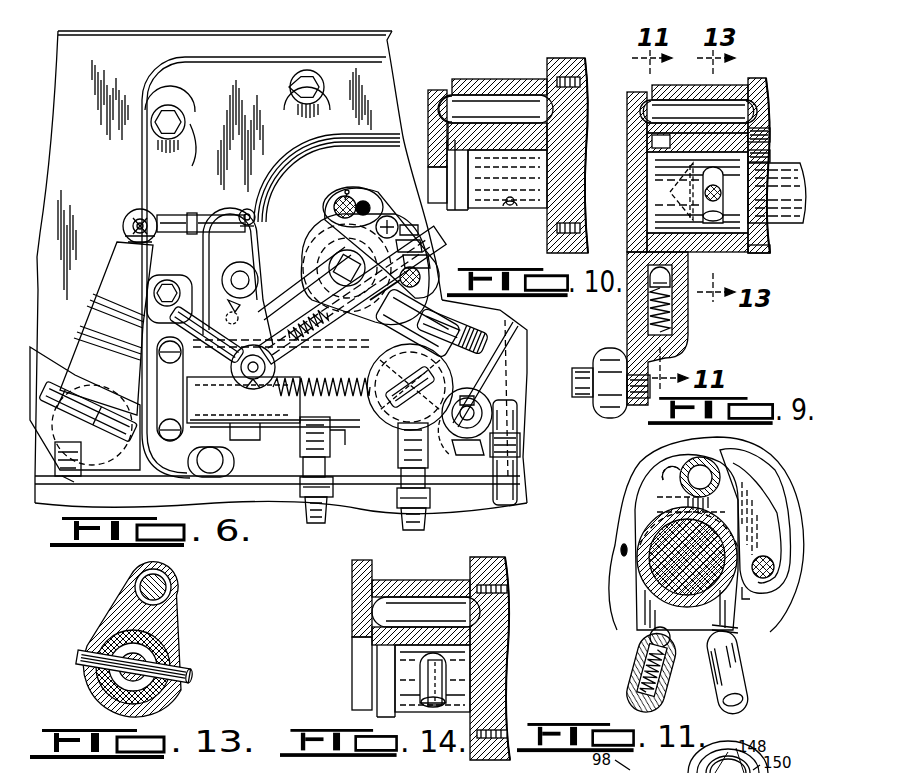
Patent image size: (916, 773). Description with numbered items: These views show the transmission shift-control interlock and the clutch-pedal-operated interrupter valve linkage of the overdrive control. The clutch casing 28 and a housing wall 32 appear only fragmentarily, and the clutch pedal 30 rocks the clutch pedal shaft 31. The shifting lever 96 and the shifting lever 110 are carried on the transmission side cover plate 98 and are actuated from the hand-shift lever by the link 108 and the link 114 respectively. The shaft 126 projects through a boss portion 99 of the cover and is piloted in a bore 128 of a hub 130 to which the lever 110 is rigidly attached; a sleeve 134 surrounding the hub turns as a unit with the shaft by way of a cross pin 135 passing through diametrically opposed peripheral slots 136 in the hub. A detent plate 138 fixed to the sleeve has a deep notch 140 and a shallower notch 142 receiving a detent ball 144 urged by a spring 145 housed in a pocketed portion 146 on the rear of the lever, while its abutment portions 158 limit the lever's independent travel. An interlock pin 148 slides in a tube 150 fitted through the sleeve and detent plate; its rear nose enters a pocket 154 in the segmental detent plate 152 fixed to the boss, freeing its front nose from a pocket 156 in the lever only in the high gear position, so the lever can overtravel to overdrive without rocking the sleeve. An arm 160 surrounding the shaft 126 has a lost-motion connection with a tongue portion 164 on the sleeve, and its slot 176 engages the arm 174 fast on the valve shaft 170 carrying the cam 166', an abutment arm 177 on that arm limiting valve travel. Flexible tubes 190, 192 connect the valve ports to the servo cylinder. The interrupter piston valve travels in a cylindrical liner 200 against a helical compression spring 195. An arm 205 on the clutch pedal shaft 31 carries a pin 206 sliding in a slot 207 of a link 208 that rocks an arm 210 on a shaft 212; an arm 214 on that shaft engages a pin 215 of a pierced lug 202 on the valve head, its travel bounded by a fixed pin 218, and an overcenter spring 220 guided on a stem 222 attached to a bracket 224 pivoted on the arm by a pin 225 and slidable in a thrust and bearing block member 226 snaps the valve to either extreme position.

In FIG. 6, the clutch casing 28 is at (68, 76).
In FIG. 6, the clutch pedal 30 is at (45, 366).
In FIG. 6, the clutch pedal shaft 31 is at (108, 460).
In FIG. 6, the housing wall 32 is at (380, 46).
In FIG. 6, the shifting lever 96 is at (522, 362).
In FIG. 6, the transmission side cover plate 98 is at (236, 78).
In FIG. 11, the transmission side cover plate 98 is at (777, 610).
In FIG. 6, the boss portion 99 is at (347, 192).
In FIG. 10, the boss portion 99 is at (586, 58).
In FIG. 9, the boss portion 99 is at (768, 84).
In FIG. 14, the boss portion 99 is at (507, 562).
In FIG. 11, the boss portion 99 is at (753, 605).
In FIG. 6, the link 108 is at (470, 396).
In FIG. 6, the shifting lever 110 is at (431, 262).
In FIG. 10, the shifting lever 110 is at (437, 203).
In FIG. 9, the shifting lever 110 is at (636, 238).
In FIG. 14, the shifting lever 110 is at (360, 683).
In FIG. 6, the link 114 is at (175, 328).
In FIG. 9, the link 114 is at (610, 414).
In FIG. 9, the shaft 126 is at (780, 218).
In FIG. 14, the shaft 126 is at (447, 670).
In FIG. 13, the shaft 126 is at (100, 686).
In FIG. 9, the bore 128 is at (668, 192).
In FIG. 9, the hub 130 is at (653, 205).
In FIG. 14, the hub 130 is at (448, 657).
In FIG. 13, the hub 130 is at (166, 652).
In FIG. 11, the hub 130 is at (650, 587).
In FIG. 10, the sleeve 134 is at (482, 209).
In FIG. 9, the sleeve 134 is at (720, 247).
In FIG. 14, the sleeve 134 is at (403, 703).
In FIG. 13, the sleeve 134 is at (182, 627).
In FIG. 11, the sleeve 134 is at (650, 572).
In FIG. 6, the cross pin 135 is at (325, 256).
In FIG. 10, the cross pin 135 is at (511, 208).
In FIG. 9, the cross pin 135 is at (722, 193).
In FIG. 14, the cross pin 135 is at (467, 687).
In FIG. 13, the cross pin 135 is at (190, 675).
In FIG. 11, the cross pin 135 is at (622, 550).
In FIG. 9, the peripheral slots 136 is at (724, 208).
In FIG. 14, the peripheral slots 136 is at (427, 665).
In FIG. 13, the peripheral slots 136 is at (175, 692).
In FIG. 6, the detent plate 138 is at (395, 214).
In FIG. 10, the detent plate 138 is at (456, 76).
In FIG. 9, the detent plate 138 is at (652, 141).
In FIG. 14, the detent plate 138 is at (377, 645).
In FIG. 11, the detent plate 138 is at (665, 493).
In FIG. 11, the notch 140 is at (652, 633).
In FIG. 11, the notch 142 is at (736, 634).
In FIG. 6, the detent ball 144 is at (338, 324).
In FIG. 9, the detent ball 144 is at (632, 262).
In FIG. 11, the detent ball 144 is at (633, 660).
In FIG. 9, the spring 145 is at (650, 314).
In FIG. 11, the spring 145 is at (630, 687).
In FIG. 9, the pocketed portion 146 is at (676, 318).
In FIG. 11, the pocketed portion 146 is at (628, 703).
In FIG. 6, the interlock pin 148 is at (420, 229).
In FIG. 10, the interlock pin 148 is at (495, 109).
In FIG. 9, the interlock pin 148 is at (698, 111).
In FIG. 14, the interlock pin 148 is at (426, 612).
In FIG. 13, the interlock pin 148 is at (170, 585).
In FIG. 11, the interlock pin 148 is at (720, 468).
In FIG. 6, the tube 150 is at (422, 246).
In FIG. 10, the tube 150 is at (497, 83).
In FIG. 9, the tube 150 is at (690, 92).
In FIG. 14, the tube 150 is at (443, 597).
In FIG. 13, the tube 150 is at (170, 598).
In FIG. 11, the tube 150 is at (665, 465).
In FIG. 6, the segmental detent plate 152 is at (340, 200).
In FIG. 10, the segmental detent plate 152 is at (550, 65).
In FIG. 9, the segmental detent plate 152 is at (755, 85).
In FIG. 14, the segmental detent plate 152 is at (470, 567).
In FIG. 11, the segmental detent plate 152 is at (760, 497).
In FIG. 6, the pocket 154 is at (366, 200).
In FIG. 10, the pocket 154 is at (582, 84).
In FIG. 9, the pocket 154 is at (758, 110).
In FIG. 14, the pocket 154 is at (507, 613).
In FIG. 10, the pocket 156 is at (442, 97).
In FIG. 9, the pocket 156 is at (640, 112).
In FIG. 14, the pocket 156 is at (352, 577).
In FIG. 6, the abutment portions 158 is at (378, 322).
In FIG. 11, the abutment portions 158 is at (742, 660).
In FIG. 6, the arm 160 is at (432, 300).
In FIG. 9, the arm 160 is at (762, 137).
In FIG. 11, the arm 160 is at (740, 677).
In FIG. 6, the tongue portion 164 is at (322, 236).
In FIG. 9, the tongue portion 164 is at (762, 157).
In FIG. 11, the tongue portion 164 is at (677, 517).
In FIG. 6, the cam 166' is at (402, 394).
In FIG. 6, the shaft 170 is at (465, 457).
In FIG. 6, the arm 174 is at (448, 331).
In FIG. 11, the slot 176 is at (742, 707).
In FIG. 6, the abutment arm 177 is at (441, 434).
In FIG. 6, the flexible tube 190 is at (505, 336).
In FIG. 6, the flexible tube 192 is at (400, 521).
In FIG. 6, the helical compression spring 195 is at (342, 445).
In FIG. 6, the cylindrical liner 200 is at (308, 523).
In FIG. 6, the pierced lug 202 is at (186, 382).
In FIG. 6, the arm 205 is at (110, 293).
In FIG. 6, the pin 206 is at (132, 219).
In FIG. 6, the slot 207 is at (126, 236).
In FIG. 6, the link 208 is at (190, 206).
In FIG. 6, the arm 210 is at (255, 220).
In FIG. 6, the shaft 212 is at (237, 270).
In FIG. 6, the arm 214 is at (227, 277).
In FIG. 6, the pin 215 is at (186, 398).
In FIG. 6, the fixed pin 218 is at (310, 262).
In FIG. 6, the overcenter spring 220 is at (231, 366).
In FIG. 6, the stem 222 is at (245, 400).
In FIG. 6, the bracket 224 is at (238, 320).
In FIG. 6, the pin 225 is at (240, 308).
In FIG. 6, the thrust and bearing block member 226 is at (246, 441).